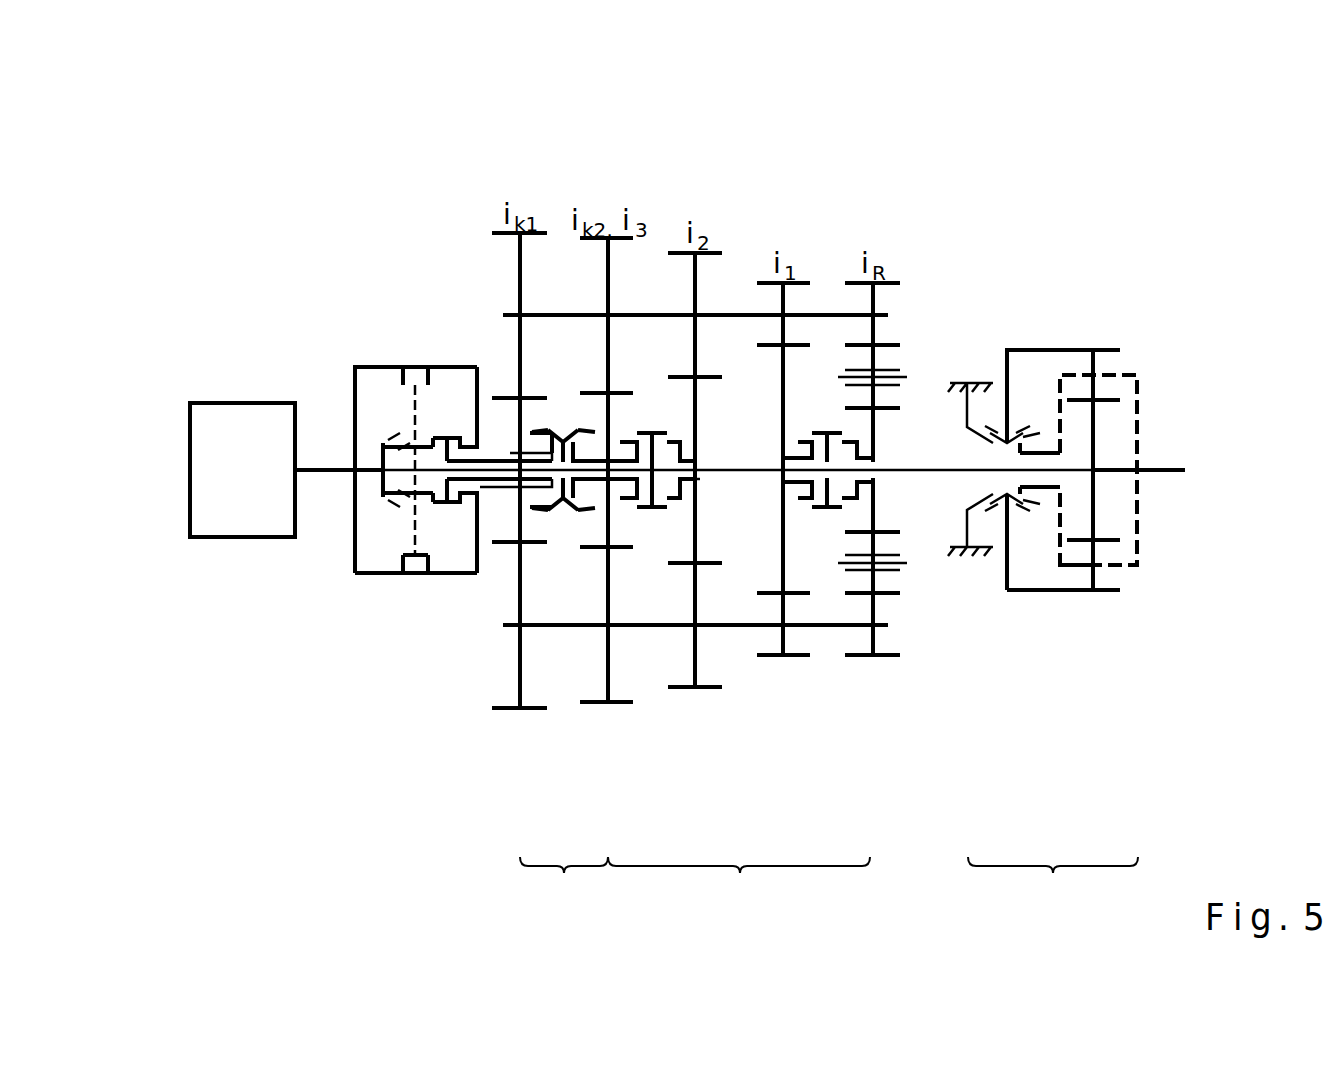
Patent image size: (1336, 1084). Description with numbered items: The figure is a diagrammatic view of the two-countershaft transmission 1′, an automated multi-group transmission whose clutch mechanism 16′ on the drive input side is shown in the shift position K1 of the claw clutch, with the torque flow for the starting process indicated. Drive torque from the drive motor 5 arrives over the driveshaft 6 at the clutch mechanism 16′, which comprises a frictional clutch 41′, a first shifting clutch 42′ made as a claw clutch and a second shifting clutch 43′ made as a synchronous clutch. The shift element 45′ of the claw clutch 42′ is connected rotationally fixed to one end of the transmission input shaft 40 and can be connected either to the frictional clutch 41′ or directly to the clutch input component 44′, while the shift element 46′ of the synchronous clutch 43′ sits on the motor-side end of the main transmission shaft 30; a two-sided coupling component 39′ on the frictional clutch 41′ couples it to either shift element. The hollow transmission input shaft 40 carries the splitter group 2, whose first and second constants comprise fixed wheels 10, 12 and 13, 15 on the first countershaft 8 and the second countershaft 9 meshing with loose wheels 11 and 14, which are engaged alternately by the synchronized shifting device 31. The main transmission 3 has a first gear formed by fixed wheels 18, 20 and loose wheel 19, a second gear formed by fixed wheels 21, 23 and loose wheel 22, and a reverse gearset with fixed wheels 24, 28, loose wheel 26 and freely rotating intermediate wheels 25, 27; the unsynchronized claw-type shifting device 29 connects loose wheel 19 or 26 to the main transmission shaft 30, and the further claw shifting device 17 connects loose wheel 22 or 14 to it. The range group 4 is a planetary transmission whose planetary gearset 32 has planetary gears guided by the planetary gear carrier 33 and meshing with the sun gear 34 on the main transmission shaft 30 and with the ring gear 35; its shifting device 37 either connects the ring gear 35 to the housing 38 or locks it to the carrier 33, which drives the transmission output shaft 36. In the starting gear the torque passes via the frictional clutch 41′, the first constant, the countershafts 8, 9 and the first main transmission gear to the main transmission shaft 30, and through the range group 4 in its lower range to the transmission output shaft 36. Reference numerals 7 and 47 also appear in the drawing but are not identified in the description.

The two-countershaft transmission 1′ is at (126, 306).
The splitter group 2 is at (564, 887).
The main transmission 3 is at (739, 887).
The range group 4 is at (1053, 887).
The drive motor 5 is at (189, 626).
The driveshaft 6 is at (260, 659).
The clutch housing 7 is at (419, 269).
The first countershaft 8 is at (482, 289).
The second countershaft 9 is at (738, 659).
The fixed wheel 10 is at (674, 358).
The loose wheel 11 is at (457, 668).
The fixed wheel 12 is at (523, 541).
The fixed wheel 13 is at (632, 203).
The loose wheel 14 is at (594, 645).
The fixed wheel 15 is at (618, 543).
The clutch mechanism 16′ is at (303, 676).
The claw shifting device 17 is at (675, 299).
The fixed wheel 18 is at (790, 218).
The loose wheel 19 is at (830, 663).
The fixed wheel 20 is at (790, 597).
The fixed wheel 21 is at (717, 203).
The loose wheel 22 is at (731, 664).
The fixed wheel 23 is at (700, 582).
The fixed wheel 24 is at (890, 230).
The intermediate wheel 25 is at (914, 276).
The loose wheel 26 is at (943, 663).
The intermediate wheel 27 is at (912, 702).
The fixed wheel 28 is at (888, 702).
The claw-type shifting device 29 is at (830, 276).
The main transmission shaft 30 is at (1062, 719).
The shifting device 31 is at (569, 294).
The planetary gearset 32 is at (1134, 707).
The planetary gear carrier 33 is at (1087, 328).
The sun gear 34 is at (1138, 315).
The ring gear 35 is at (1063, 340).
The transmission output shaft 36 is at (1180, 280).
The shifting device 37 is at (1106, 599).
The housing 38 is at (996, 323).
The coupling component 39′ is at (383, 671).
The transmission input shaft 40 is at (413, 711).
The frictional clutch 41′ is at (299, 323).
The claw clutch 42′ is at (379, 332).
The synchronous clutch 43′ is at (264, 332).
The clutch input component 44′ is at (340, 664).
The shift element 45′ is at (342, 299).
The shift element 46′ is at (273, 332).
The shift sleeve 47 is at (556, 300).
The shift position K1 is at (453, 883).